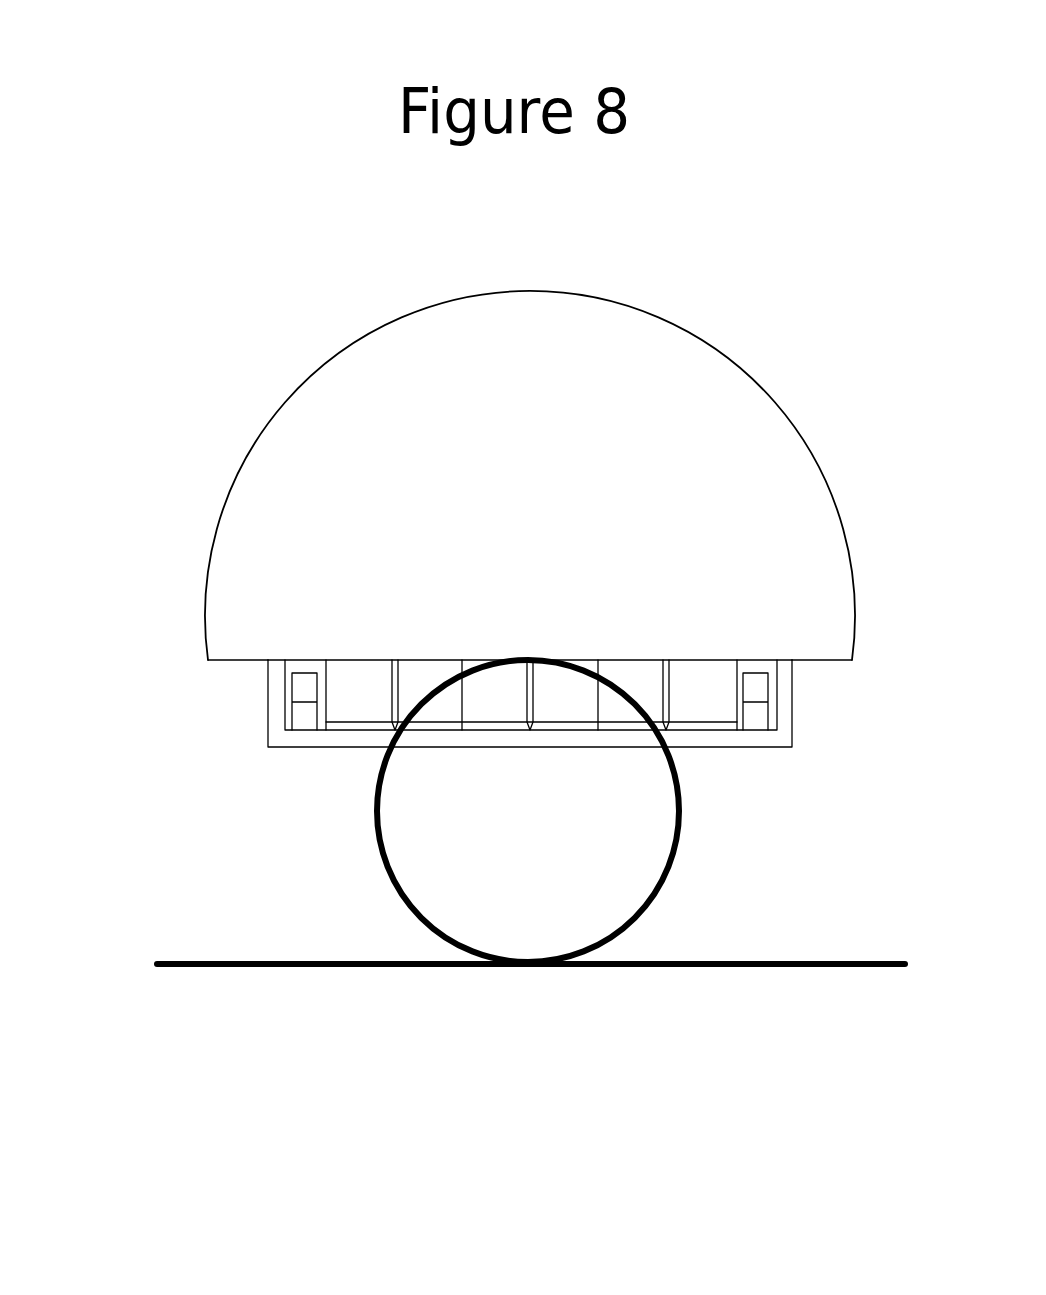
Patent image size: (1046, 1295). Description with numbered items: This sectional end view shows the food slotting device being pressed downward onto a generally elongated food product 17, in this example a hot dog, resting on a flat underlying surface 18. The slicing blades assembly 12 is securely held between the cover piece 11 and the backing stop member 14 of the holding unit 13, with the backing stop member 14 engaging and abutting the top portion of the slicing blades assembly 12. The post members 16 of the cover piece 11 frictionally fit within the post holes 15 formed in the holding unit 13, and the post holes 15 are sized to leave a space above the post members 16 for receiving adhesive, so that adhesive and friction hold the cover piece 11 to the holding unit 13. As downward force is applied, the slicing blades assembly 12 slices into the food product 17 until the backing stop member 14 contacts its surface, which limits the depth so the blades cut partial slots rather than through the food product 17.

The cover piece 11 is at (779, 748).
The slicing blades assembly 12 is at (671, 700).
The holding unit 13 is at (239, 550).
The backing stop member 14 is at (372, 660).
The post holes 15 is at (305, 693).
The post members 16 is at (755, 714).
The food product 17 is at (394, 880).
The flat underlying surface 18 is at (682, 969).